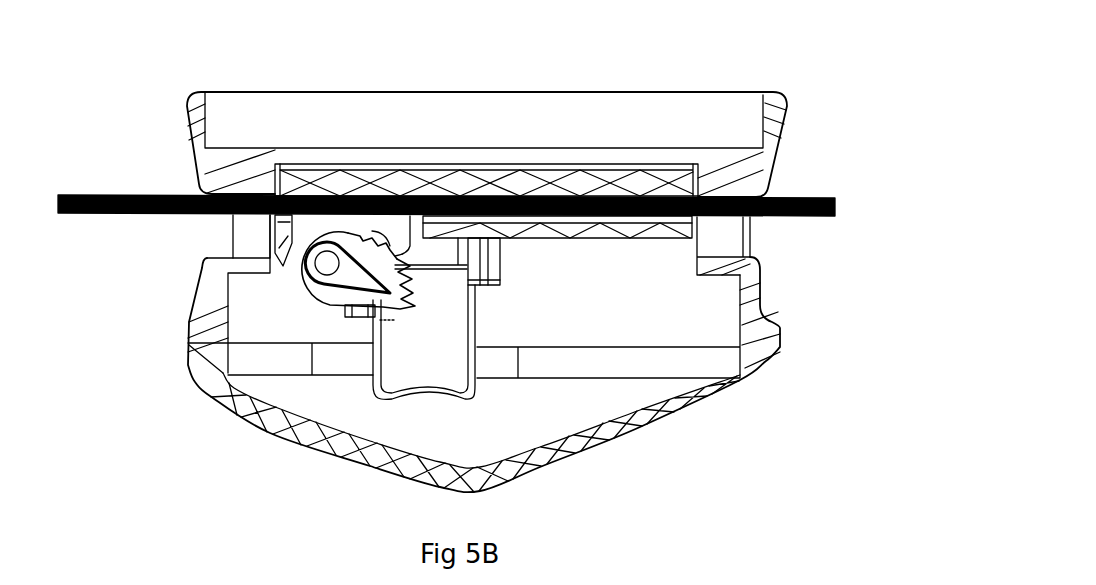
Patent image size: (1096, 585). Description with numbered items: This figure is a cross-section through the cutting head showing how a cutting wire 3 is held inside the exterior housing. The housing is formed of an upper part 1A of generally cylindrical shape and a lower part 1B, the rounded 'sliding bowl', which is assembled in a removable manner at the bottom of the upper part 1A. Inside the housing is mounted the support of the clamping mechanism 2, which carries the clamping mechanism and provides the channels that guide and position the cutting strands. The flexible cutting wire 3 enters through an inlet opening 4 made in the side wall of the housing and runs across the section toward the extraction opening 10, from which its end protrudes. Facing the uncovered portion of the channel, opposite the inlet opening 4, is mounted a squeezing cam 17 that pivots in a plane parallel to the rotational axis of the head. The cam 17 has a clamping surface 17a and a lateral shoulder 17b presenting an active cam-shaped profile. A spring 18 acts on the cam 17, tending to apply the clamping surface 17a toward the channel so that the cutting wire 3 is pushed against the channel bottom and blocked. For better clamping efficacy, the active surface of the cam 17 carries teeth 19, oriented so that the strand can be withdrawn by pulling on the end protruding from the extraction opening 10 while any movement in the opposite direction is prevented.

The upper part 1A is at (186, 107).
The lower part 1B is at (292, 423).
The support of the clamping mechanism 2 is at (540, 183).
The cutting wire 3 is at (112, 195).
The inlet opening 4 is at (720, 247).
The extraction opening 10 is at (245, 243).
The squeezing cam 17 is at (308, 285).
The clamping surface 17a is at (371, 242).
The lateral shoulder 17b is at (336, 246).
The spring 18 is at (356, 275).
The teeth 19 is at (392, 262).